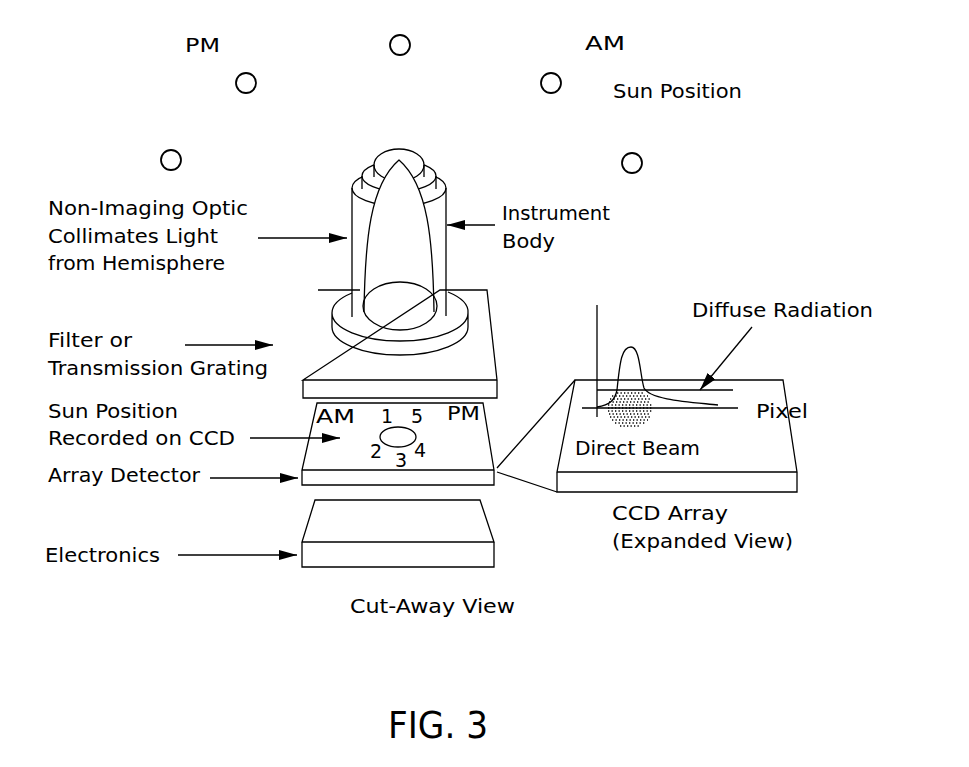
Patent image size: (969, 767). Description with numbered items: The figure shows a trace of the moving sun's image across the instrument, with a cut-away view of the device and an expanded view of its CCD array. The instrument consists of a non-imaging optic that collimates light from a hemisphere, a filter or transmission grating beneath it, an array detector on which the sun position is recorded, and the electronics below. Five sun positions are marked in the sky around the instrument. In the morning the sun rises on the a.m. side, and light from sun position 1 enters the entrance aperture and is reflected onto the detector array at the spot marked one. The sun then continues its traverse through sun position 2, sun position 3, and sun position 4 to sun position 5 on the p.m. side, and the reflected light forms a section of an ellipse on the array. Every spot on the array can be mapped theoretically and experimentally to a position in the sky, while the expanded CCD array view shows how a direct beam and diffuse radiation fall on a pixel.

The sun position 1 is at (632, 150).
The sun position 2 is at (551, 70).
The sun position 3 is at (400, 31).
The sun position 4 is at (246, 70).
The sun position 5 is at (171, 147).